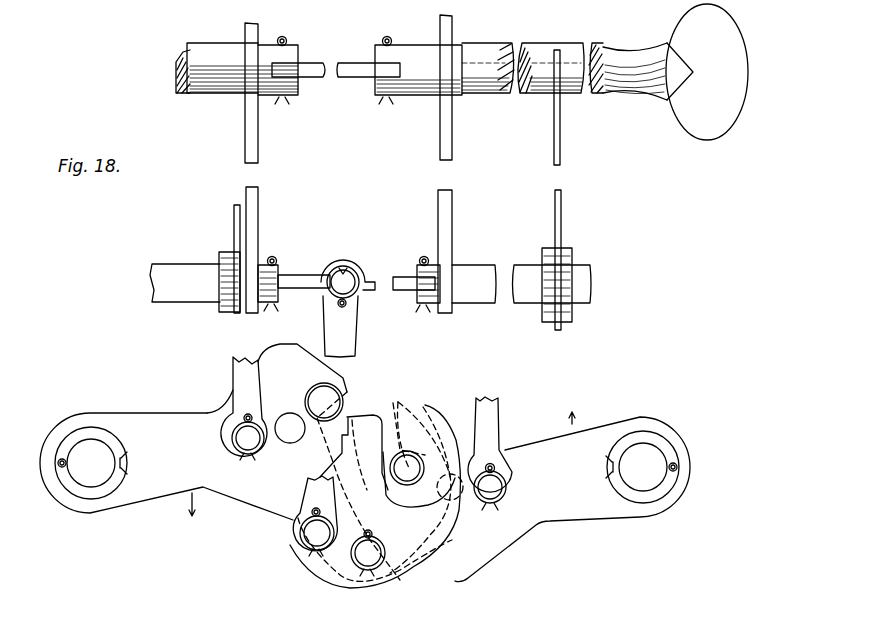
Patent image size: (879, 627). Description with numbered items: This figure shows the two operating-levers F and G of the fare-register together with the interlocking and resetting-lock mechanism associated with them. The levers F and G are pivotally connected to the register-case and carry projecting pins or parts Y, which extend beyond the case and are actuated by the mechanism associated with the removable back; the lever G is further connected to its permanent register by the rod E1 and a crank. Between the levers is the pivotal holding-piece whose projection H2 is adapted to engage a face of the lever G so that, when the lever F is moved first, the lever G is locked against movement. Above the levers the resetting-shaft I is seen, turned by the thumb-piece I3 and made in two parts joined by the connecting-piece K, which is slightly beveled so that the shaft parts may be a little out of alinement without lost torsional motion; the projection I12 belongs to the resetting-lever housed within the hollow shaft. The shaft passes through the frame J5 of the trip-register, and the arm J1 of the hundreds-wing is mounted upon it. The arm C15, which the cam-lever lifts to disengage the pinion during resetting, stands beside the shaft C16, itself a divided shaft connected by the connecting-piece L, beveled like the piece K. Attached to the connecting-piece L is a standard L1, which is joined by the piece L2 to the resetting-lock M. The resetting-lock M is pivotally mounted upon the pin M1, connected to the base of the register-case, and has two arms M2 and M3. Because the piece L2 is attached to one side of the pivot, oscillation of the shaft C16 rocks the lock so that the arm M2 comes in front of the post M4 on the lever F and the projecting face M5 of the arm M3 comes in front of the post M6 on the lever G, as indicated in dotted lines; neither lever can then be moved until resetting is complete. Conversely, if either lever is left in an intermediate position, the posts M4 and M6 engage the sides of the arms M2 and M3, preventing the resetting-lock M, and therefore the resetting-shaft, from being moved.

The resetting-shaft I is at (603, 94).
The projection of the resetting-lever I12 is at (421, 72).
The thumb-piece I3 is at (714, 132).
The connecting-piece K is at (349, 70).
The frame of the trip-register J5 is at (232, 180).
The arm of the hundreds-wing J1 is at (236, 222).
The arm C15 is at (561, 160).
The shaft C16 is at (166, 268).
The connecting-piece L is at (297, 276).
The standard L1 is at (349, 282).
The piece L2 is at (330, 332).
The operating-lever F is at (148, 494).
The operating-lever G is at (582, 517).
The rod E1 is at (498, 421).
The projecting pins Y is at (288, 420).
The resetting-lock M is at (458, 545).
The pin M1 is at (366, 560).
The arm of the resetting-lock M2 is at (368, 418).
The arm of the resetting-lock M3 is at (432, 460).
The post M4 is at (332, 398).
The projecting face M5 is at (435, 448).
The post M6 is at (409, 458).
The projection of the holding-piece H2 is at (405, 455).